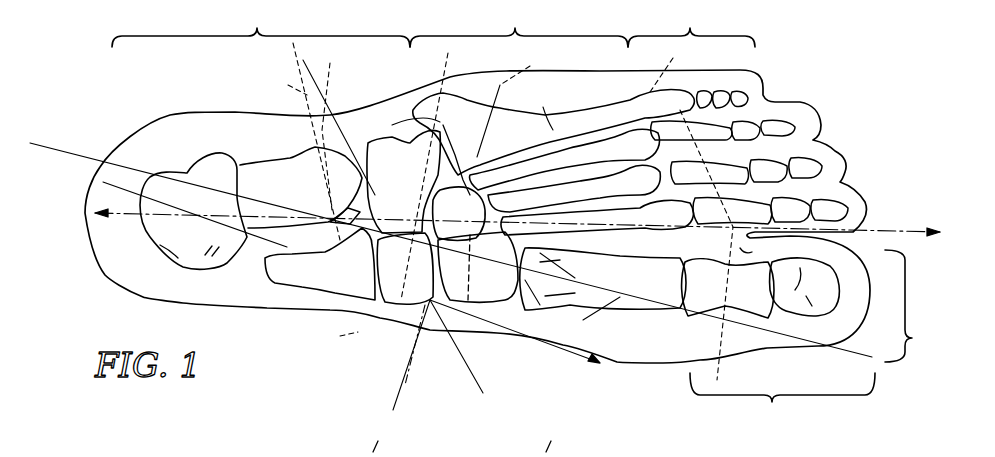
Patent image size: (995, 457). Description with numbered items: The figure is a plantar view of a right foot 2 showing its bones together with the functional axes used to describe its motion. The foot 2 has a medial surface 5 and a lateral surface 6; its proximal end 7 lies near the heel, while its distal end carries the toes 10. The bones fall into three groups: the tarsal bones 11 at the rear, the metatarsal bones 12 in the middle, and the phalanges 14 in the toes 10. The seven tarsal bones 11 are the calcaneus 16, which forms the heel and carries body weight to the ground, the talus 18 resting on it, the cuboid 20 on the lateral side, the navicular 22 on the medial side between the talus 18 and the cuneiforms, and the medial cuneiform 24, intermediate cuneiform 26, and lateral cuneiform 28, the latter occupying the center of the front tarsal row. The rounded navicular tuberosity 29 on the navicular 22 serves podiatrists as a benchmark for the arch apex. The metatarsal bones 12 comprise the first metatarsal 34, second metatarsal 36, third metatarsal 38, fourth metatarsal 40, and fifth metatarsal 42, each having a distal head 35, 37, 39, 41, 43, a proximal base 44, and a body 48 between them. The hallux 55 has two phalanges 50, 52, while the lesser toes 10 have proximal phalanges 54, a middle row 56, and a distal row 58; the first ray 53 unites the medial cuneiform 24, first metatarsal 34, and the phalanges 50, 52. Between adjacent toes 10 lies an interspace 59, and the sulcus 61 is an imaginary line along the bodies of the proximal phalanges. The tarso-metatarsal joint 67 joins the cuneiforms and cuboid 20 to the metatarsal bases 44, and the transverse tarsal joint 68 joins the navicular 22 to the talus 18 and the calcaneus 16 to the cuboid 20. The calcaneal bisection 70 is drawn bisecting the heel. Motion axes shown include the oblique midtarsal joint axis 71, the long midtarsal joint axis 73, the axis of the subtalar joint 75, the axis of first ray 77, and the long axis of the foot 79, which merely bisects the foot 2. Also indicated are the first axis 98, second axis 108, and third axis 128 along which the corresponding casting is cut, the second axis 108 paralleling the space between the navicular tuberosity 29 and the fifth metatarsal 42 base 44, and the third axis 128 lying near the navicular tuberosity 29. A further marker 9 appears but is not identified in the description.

The foot 2 is at (96, 101).
The medial surface 5 is at (467, 337).
The lateral surface 6 is at (389, 87).
The proximal end 7 is at (68, 232).
The arrow 9 is at (888, 154).
The toes 10 is at (765, 84).
The tarsal bones 11 is at (261, 23).
The metatarsal bones 12 is at (519, 23).
The phalanges 14 is at (691, 23).
The calcaneus 16 is at (261, 206).
The talus 18 is at (331, 275).
The cuboid 20 is at (382, 214).
The navicular 22 is at (392, 263).
The medial cuneiform 24 is at (483, 283).
The intermediate cuneiform 26 is at (463, 267).
The lateral cuneiform 28 is at (441, 221).
The navicular tuberosity 29 is at (417, 310).
The first metatarsal 34 is at (586, 291).
The head of first metatarsal 35 is at (655, 315).
The second metatarsal 36 is at (597, 228).
The head of second metatarsal 37 is at (652, 228).
The third metatarsal 38 is at (557, 199).
The head of third metatarsal 39 is at (636, 226).
The fourth metatarsal 40 is at (511, 173).
The head of fourth metatarsal 41 is at (556, 128).
The fifth metatarsal 42 is at (511, 139).
The head of fifth metatarsal 43 is at (600, 120).
The metatarsal base 44 is at (459, 220).
The metatarsal body 48 is at (571, 210).
The proximal phalanx of hallux 50 is at (716, 300).
The distal phalanx of hallux 52 is at (810, 300).
The first ray 53 is at (913, 306).
The proximal phalanges 54 is at (628, 112).
The hallux 55 is at (782, 400).
The middle row of phalanges 56 is at (705, 92).
The distal row of phalanges 58 is at (738, 96).
The interspace 59 is at (746, 250).
The sulcus 61 is at (691, 209).
The tarso-metatarsal joint 67 is at (504, 221).
The transverse tarsal (Chopart's) joint 68 is at (231, 214).
The calcaneal bisection 70 is at (85, 213).
The oblique midtarsal joint axis 71 is at (334, 141).
The long midtarsal joint axis 73 is at (117, 162).
The axis of the subtalar joint 75 is at (557, 352).
The axis of first ray 77 is at (521, 101).
The long axis of the foot 79 is at (912, 226).
The first axis 98 is at (310, 204).
The second axis 108 is at (455, 58).
The third axis 128 is at (416, 355).